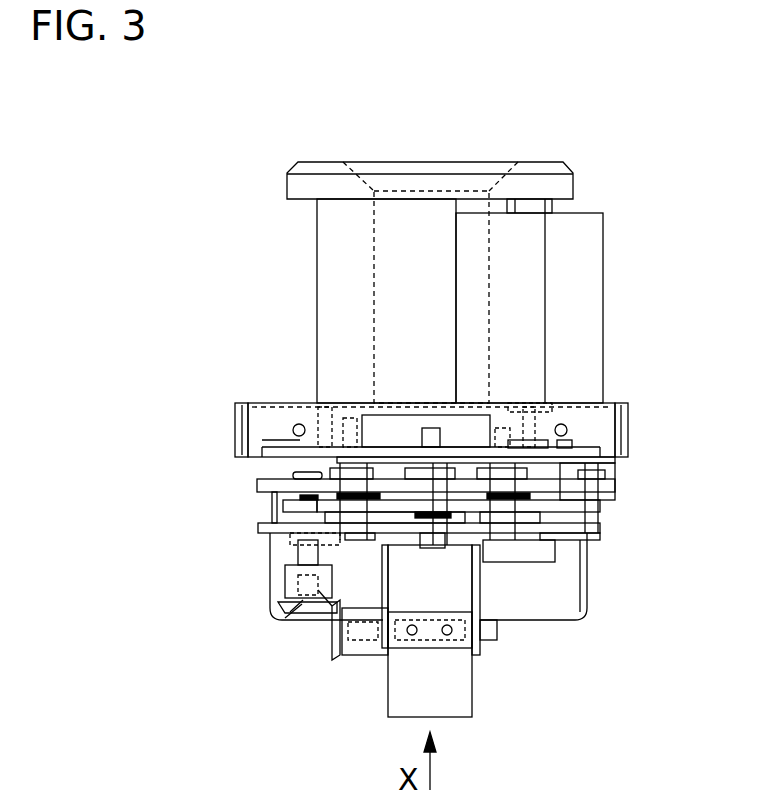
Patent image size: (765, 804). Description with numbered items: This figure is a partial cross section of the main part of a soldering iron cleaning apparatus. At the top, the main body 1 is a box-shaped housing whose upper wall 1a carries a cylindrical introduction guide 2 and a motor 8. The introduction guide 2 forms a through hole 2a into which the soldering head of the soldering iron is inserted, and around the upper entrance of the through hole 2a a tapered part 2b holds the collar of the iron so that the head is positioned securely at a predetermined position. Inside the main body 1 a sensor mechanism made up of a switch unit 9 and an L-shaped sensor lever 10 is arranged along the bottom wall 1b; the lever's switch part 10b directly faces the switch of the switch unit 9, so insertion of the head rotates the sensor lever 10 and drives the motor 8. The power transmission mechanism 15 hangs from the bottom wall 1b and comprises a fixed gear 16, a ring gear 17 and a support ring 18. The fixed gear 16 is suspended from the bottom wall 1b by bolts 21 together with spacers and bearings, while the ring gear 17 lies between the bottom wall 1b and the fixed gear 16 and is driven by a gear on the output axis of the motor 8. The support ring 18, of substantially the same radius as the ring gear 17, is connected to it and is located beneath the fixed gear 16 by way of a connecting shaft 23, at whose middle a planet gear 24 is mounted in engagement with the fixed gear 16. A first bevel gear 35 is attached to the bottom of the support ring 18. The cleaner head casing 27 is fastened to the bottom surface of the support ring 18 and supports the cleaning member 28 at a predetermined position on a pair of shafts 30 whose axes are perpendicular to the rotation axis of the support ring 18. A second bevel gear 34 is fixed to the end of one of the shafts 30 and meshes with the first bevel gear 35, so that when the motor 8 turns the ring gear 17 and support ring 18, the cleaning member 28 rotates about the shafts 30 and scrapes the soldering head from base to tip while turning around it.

The main body 1 is at (630, 415).
The upper wall 1a is at (262, 402).
The bottom wall 1b is at (250, 458).
The introduction guide 2 is at (575, 176).
The through hole 2a is at (410, 255).
The tapered part 2b is at (493, 185).
The motor 8 is at (605, 270).
The switch unit 9 is at (320, 420).
The sensor lever 10 is at (275, 445).
The switch part 10b is at (348, 410).
The power transmission mechanism 15 is at (628, 511).
The fixed gear 16 is at (545, 504).
The ring gear 17 is at (262, 485).
The support ring 18 is at (270, 525).
The bolts 21 is at (513, 542).
The connecting shaft 23 is at (293, 553).
The planet gear 24 is at (290, 502).
The cleaner head casing 27 is at (483, 582).
The cleaning member 28 is at (455, 697).
The shafts 30 is at (500, 633).
The second bevel gear 34 is at (337, 655).
The first bevel gear 35 is at (282, 617).